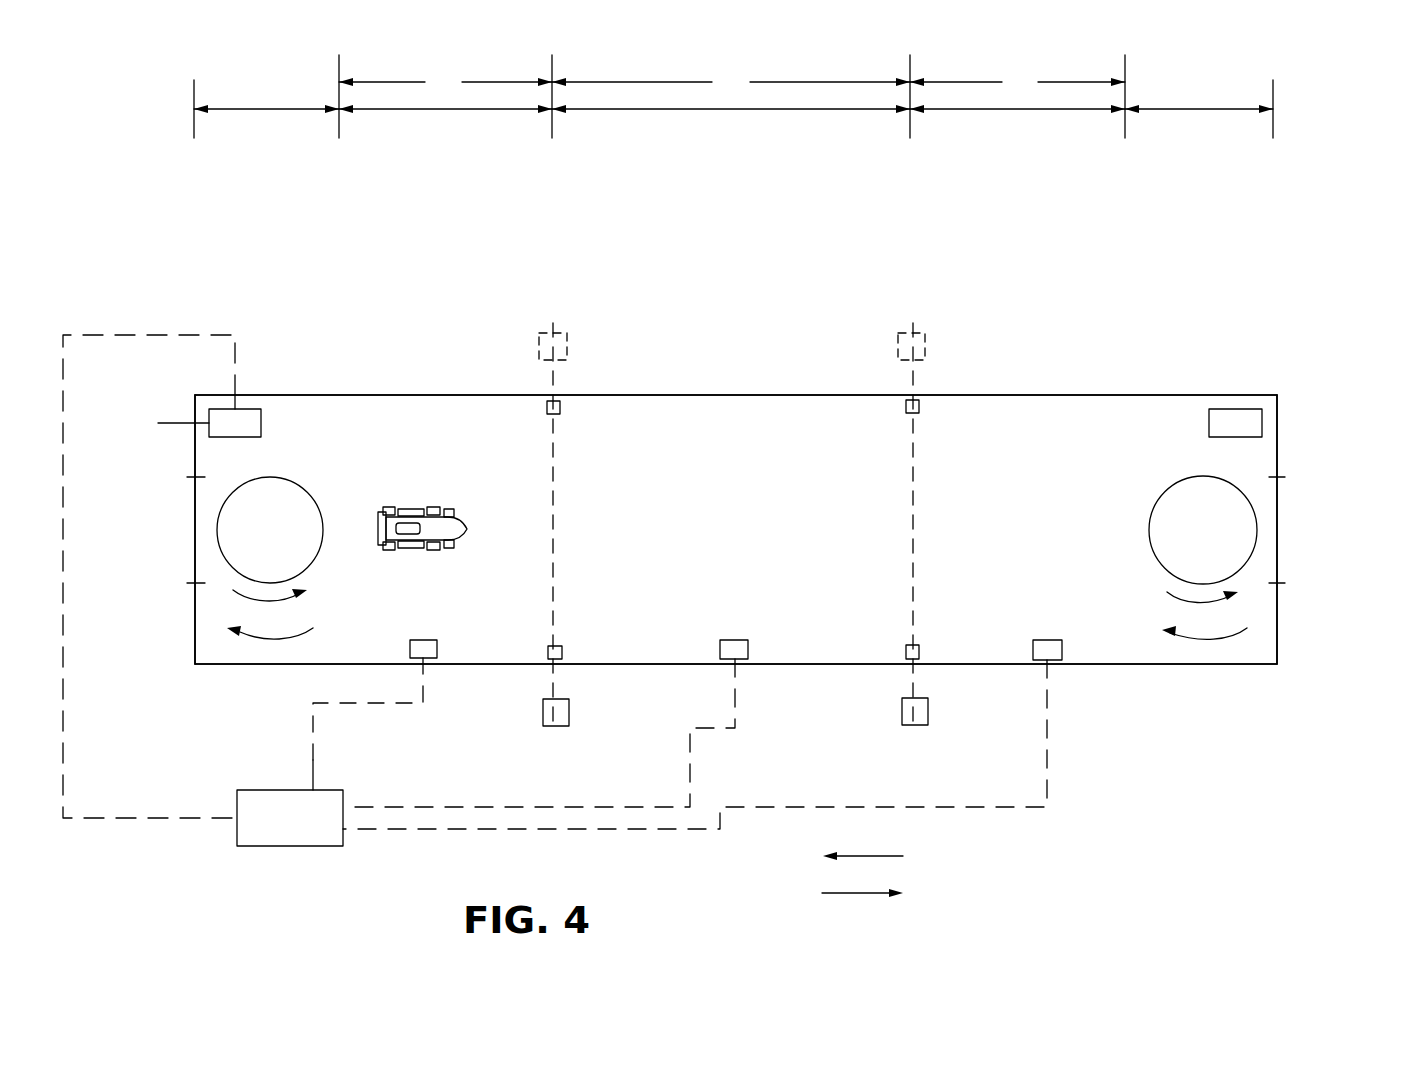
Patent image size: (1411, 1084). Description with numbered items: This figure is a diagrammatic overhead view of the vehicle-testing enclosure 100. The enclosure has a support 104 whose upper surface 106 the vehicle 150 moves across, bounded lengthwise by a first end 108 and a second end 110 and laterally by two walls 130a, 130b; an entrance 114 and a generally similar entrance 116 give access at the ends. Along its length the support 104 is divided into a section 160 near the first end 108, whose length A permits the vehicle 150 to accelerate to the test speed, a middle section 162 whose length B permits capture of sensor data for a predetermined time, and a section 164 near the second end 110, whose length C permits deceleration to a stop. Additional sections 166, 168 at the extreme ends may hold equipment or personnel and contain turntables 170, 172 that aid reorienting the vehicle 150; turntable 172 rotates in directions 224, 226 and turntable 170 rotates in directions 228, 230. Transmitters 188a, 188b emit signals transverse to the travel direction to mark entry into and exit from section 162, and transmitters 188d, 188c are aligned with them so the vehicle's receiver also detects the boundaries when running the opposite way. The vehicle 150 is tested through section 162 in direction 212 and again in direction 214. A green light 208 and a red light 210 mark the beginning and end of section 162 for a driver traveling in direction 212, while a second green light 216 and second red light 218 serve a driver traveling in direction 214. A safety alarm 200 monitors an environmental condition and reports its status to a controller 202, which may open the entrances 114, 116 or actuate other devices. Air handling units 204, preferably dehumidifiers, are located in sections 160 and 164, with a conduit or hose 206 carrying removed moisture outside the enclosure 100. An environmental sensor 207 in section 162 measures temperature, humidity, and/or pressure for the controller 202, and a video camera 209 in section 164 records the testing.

The apparatus 100 is at (812, 318).
The support 104 is at (706, 392).
The upper surface 106 is at (405, 444).
The first end wall 108 is at (194, 122).
The second end wall 110 is at (1273, 125).
The entrance 114 is at (195, 525).
The entrance 116 is at (1277, 525).
The wall 130a is at (1135, 395).
The wall 130b is at (1217, 665).
The vehicle 150 is at (467, 529).
The section 160 is at (453, 110).
The section 162 is at (738, 110).
The section 164 is at (1056, 110).
The section 166 is at (283, 110).
The section 168 is at (1215, 110).
The turntable 170 is at (300, 542).
The turntable 172 is at (1233, 542).
The transmitter 188a is at (569, 713).
The transmitter 188b is at (902, 722).
The transmitter 188c is at (926, 352).
The transmitter 188d is at (539, 355).
The safety alarm 200 is at (437, 650).
The controller 202 is at (320, 831).
The air handling unit 204 is at (247, 417).
The conduit or hose 206 is at (180, 422).
The sensor 207 is at (735, 640).
The green light 208 is at (557, 645).
The video camera 209 is at (1048, 640).
The red light 210 is at (920, 652).
The direction 212 is at (855, 893).
The direction 214 is at (870, 856).
The second green light 216 is at (908, 414).
The second red light 218 is at (557, 415).
The direction 224 is at (1205, 600).
The direction 226 is at (1190, 636).
The direction 228 is at (275, 602).
The direction 230 is at (283, 637).